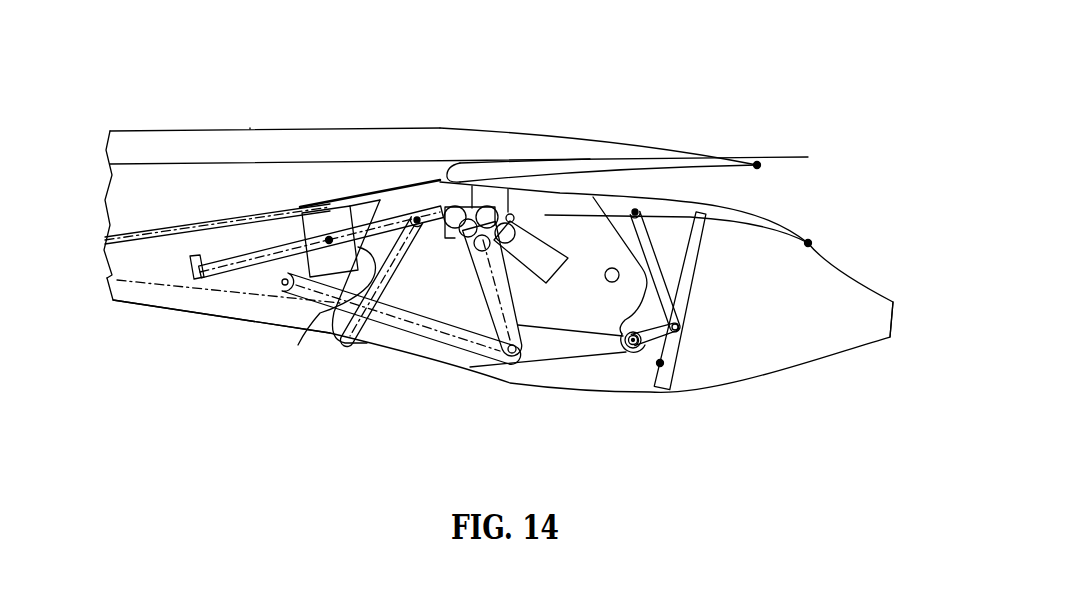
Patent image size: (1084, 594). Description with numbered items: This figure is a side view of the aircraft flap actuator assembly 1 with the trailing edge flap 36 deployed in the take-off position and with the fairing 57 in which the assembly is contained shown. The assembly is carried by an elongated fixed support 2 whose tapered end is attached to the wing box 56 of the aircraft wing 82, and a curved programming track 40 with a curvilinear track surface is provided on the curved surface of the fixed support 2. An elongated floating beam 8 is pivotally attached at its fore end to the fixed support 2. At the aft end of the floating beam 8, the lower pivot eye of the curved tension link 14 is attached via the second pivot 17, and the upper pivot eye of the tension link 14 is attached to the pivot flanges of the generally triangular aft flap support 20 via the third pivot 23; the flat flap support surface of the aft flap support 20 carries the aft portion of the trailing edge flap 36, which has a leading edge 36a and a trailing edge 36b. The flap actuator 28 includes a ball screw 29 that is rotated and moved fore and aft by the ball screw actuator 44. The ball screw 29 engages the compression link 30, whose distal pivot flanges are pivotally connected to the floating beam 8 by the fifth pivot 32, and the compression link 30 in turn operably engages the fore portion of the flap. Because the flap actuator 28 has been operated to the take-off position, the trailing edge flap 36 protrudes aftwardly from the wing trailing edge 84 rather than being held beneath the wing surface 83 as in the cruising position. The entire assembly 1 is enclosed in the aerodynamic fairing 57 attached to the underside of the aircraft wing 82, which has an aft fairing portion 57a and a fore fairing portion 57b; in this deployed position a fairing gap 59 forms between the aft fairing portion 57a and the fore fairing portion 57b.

The aircraft flap actuator assembly 1 is at (185, 100).
The fixed support 2 is at (210, 292).
The floating beam 8 is at (445, 344).
The tension link 14 is at (678, 300).
The second pivot 17 is at (628, 352).
The aft flap support 20 is at (695, 235).
The third pivot 23 is at (683, 264).
The flap actuator 28 is at (168, 256).
The ball screw 29 is at (205, 256).
The compression link 30 is at (485, 268).
The fifth pivot 32 is at (510, 362).
The trailing edge flap 36 is at (645, 188).
The leading edge 36a is at (446, 180).
The trailing edge 36b is at (808, 246).
The programming track 40 is at (546, 242).
The ball screw actuator 44 is at (323, 218).
The wing box 56 is at (247, 183).
The fairing 57 is at (695, 390).
The aft fairing portion 57a is at (850, 325).
The fore fairing portion 57b is at (247, 313).
The fairing gap 59 is at (343, 310).
The aircraft wing 82 is at (250, 130).
The wing surface 83 is at (436, 128).
The wing trailing edge 84 is at (757, 163).